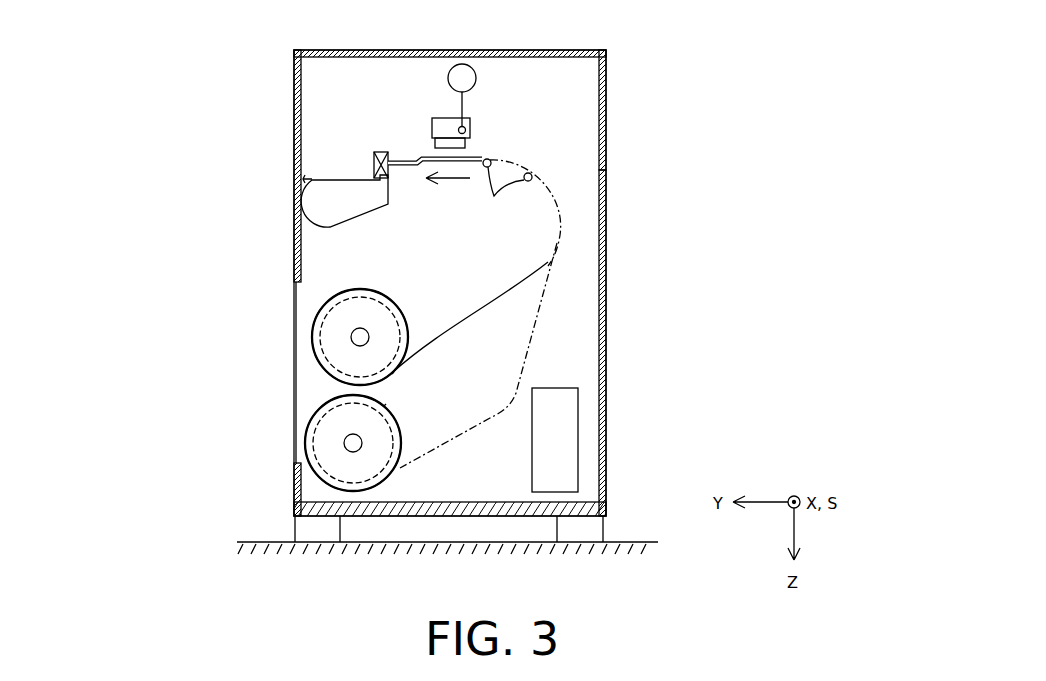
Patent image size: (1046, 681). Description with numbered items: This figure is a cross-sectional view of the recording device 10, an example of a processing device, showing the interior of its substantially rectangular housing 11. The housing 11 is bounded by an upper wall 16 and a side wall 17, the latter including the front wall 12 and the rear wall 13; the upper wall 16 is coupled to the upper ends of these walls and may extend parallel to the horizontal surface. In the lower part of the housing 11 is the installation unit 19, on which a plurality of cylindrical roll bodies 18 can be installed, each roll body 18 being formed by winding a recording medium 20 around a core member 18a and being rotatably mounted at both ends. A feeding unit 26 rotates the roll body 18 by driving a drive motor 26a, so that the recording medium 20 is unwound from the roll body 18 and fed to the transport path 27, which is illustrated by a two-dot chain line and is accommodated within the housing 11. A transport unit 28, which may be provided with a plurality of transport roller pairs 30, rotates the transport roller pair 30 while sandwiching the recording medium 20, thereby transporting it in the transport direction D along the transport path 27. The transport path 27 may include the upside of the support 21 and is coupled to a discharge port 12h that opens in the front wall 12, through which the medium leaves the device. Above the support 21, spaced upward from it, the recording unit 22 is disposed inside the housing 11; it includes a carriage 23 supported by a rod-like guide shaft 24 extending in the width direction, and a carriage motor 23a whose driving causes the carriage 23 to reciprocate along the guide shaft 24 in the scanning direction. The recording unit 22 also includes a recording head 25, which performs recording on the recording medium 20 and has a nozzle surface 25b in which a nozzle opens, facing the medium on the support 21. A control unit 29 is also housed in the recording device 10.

The recording device 10 is at (652, 54).
The housing 11 is at (600, 50).
The front wall 12 is at (293, 89).
The discharge port 12h is at (293, 179).
The rear wall 13 is at (606, 95).
The upper wall 16 is at (455, 50).
The side wall 17 is at (618, 180).
The roll body 18 is at (300, 419).
The core member 18a is at (351, 337).
The installation unit 19 is at (294, 282).
The recording medium 20 is at (360, 289).
The support 21 is at (389, 161).
The recording unit 22 is at (421, 76).
The carriage 23 is at (470, 128).
The carriage motor 23a is at (478, 80).
The guide shaft 24 is at (432, 120).
The recording head 25 is at (468, 150).
The nozzle surface 25b is at (492, 158).
The feeding unit 26 is at (413, 289).
The drive motor 26a is at (384, 406).
The transport path 27 is at (561, 229).
The transport unit 28 is at (512, 258).
The control unit 29 is at (572, 434).
The transport roller pair 30 is at (494, 196).
The transport direction D is at (448, 189).